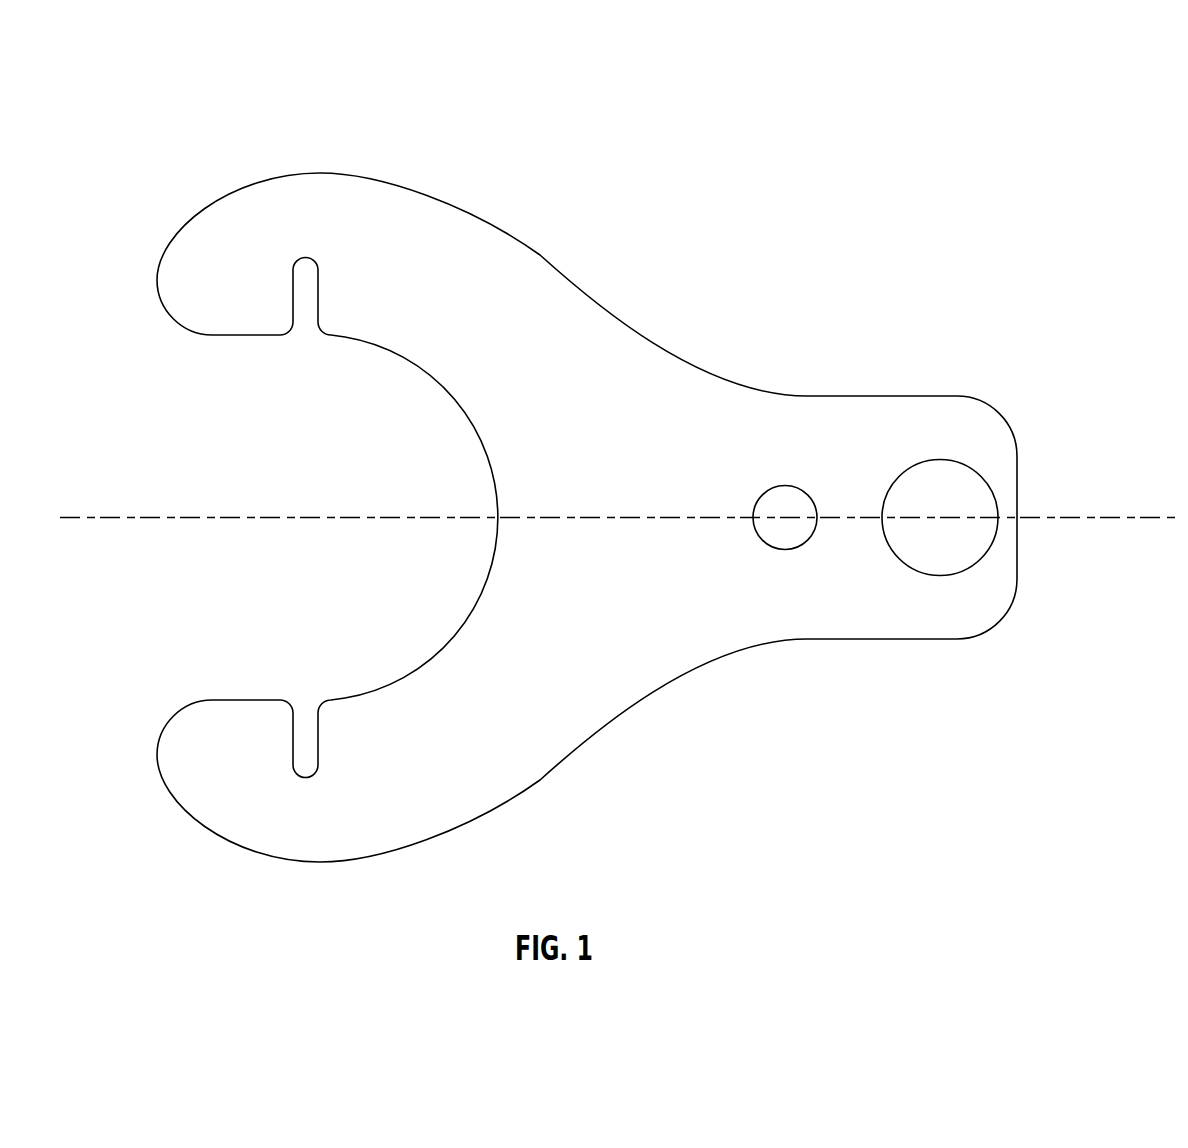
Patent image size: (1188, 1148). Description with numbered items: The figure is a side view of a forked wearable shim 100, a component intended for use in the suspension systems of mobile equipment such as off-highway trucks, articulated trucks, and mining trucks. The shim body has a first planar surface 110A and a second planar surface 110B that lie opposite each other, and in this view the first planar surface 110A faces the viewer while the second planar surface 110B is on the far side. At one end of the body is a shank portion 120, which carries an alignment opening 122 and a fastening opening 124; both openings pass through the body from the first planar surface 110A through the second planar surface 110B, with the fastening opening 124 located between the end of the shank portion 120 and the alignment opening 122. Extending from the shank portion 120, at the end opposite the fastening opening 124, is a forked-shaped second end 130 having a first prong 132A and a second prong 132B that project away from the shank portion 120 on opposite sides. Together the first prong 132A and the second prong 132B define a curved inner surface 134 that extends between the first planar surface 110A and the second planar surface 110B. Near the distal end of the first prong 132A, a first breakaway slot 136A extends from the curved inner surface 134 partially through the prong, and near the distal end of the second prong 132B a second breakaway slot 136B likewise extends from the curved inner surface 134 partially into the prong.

The forked wearable shim 100 is at (891, 155).
The first planar surface 110A is at (650, 506).
The second planar surface 110B is at (560, 264).
The shank portion 120 is at (1017, 670).
The alignment opening 122 is at (785, 527).
The fastening opening 124 is at (947, 545).
The forked-shaped second end 130 is at (710, 103).
The first prong 132A is at (193, 288).
The second prong 132B is at (187, 738).
The curved inner surface 134 is at (493, 483).
The first breakaway slot 136A is at (303, 280).
The second breakaway slot 136B is at (307, 758).